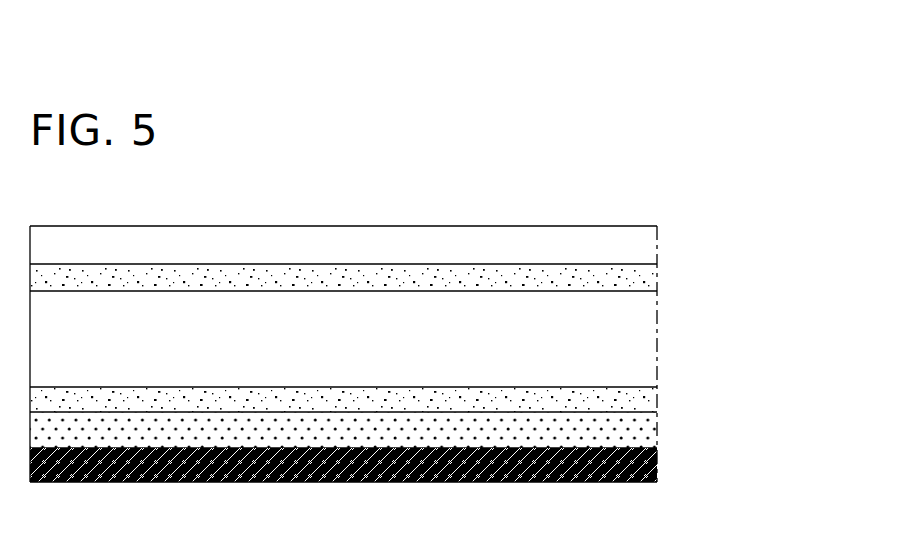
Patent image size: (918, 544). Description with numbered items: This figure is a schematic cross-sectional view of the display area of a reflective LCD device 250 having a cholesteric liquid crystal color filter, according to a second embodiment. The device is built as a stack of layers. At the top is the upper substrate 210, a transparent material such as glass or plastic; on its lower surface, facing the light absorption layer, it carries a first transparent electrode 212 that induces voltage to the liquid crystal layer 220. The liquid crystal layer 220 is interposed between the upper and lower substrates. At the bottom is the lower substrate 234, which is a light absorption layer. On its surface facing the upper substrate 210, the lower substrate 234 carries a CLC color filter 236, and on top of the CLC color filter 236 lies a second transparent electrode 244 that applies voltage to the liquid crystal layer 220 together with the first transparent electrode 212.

The reflective LCD device 250 is at (594, 124).
The upper substrate 210 is at (343, 245).
The first transparent electrode 212 is at (645, 273).
The liquid crystal layer 220 is at (638, 327).
The second transparent electrode 244 is at (645, 402).
The CLC color filter 236 is at (642, 428).
The lower substrate 234 is at (655, 473).